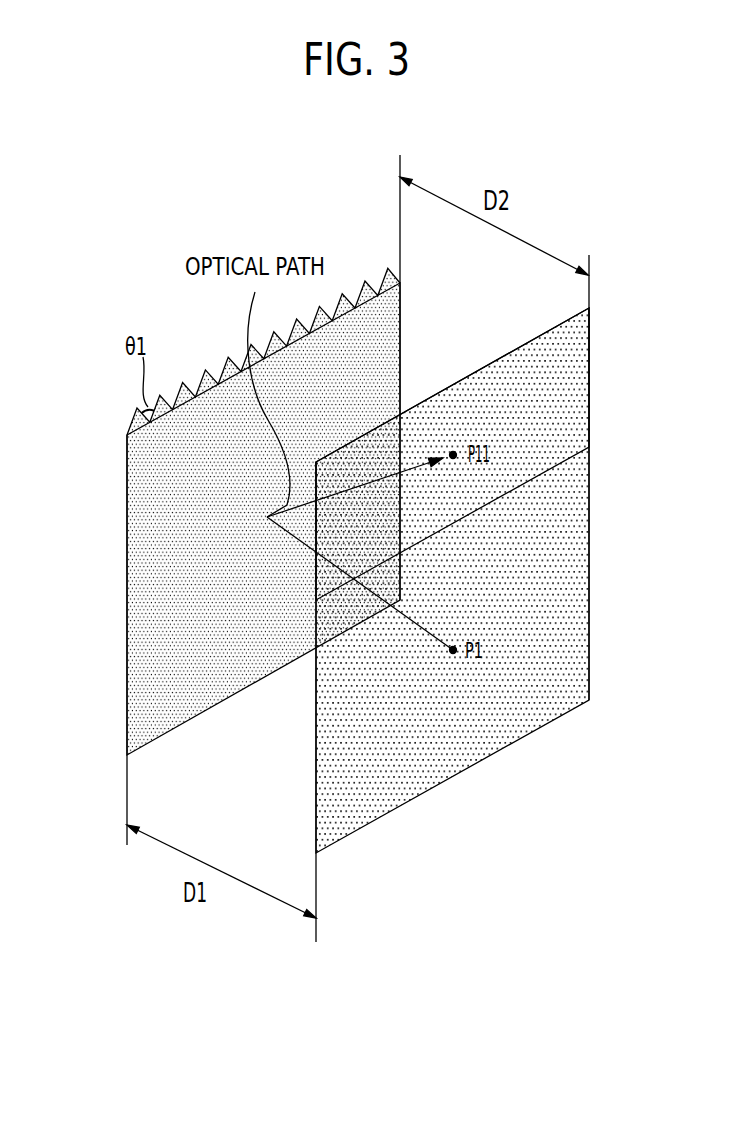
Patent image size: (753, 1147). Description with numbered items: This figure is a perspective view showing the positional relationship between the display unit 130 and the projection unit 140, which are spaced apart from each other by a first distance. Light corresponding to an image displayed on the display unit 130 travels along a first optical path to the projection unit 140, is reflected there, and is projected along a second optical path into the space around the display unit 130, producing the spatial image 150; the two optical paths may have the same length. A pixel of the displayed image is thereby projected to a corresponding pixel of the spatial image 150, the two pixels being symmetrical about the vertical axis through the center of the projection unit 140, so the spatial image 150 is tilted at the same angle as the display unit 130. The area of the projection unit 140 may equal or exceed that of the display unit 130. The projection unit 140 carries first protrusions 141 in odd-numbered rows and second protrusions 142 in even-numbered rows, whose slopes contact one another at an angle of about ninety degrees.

The display unit 130 is at (589, 640).
The projection unit 140 is at (221, 500).
The first protrusions 141 is at (128, 418).
The second protrusions 142 is at (170, 407).
The spatial image 150 is at (589, 388).